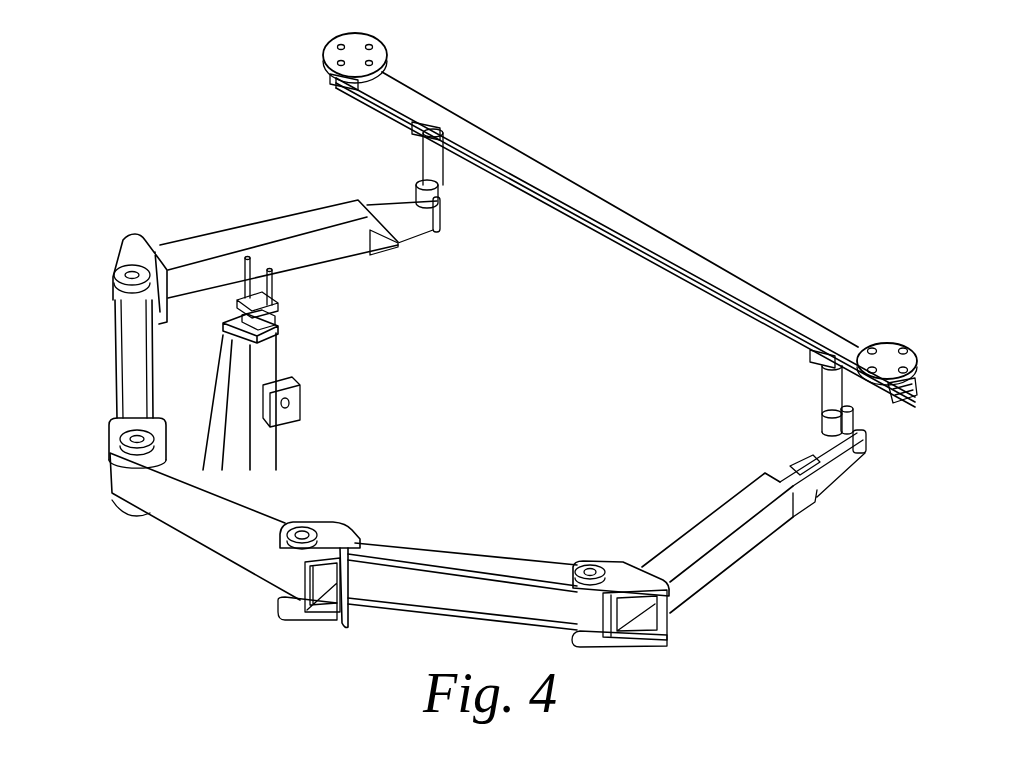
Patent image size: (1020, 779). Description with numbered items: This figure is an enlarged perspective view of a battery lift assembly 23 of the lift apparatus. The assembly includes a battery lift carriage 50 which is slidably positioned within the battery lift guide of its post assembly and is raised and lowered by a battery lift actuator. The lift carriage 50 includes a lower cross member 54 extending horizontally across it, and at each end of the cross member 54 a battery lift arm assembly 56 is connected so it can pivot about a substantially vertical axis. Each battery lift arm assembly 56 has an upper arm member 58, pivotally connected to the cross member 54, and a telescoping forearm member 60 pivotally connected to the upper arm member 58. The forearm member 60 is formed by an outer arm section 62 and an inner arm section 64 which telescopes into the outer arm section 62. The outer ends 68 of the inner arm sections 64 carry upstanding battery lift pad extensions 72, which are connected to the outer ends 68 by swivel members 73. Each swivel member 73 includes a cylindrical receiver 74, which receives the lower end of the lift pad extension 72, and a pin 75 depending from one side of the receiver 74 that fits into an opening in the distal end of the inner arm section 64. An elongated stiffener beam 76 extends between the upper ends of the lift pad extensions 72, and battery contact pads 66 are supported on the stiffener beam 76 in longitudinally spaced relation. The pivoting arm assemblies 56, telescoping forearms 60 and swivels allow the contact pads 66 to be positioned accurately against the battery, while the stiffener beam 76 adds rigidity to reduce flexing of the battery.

The battery lift assembly 23 is at (187, 540).
The battery lift carriage 50 is at (277, 349).
The lower cross member 54 is at (240, 556).
The battery lift arm assembly 56 is at (168, 243).
The upper arm member 58 is at (116, 369).
The telescoping forearm member 60 is at (343, 199).
The outer arm section 62 is at (253, 232).
The inner arm section 64 is at (403, 245).
The battery contact pad 66 is at (333, 55).
The outer end 68 is at (401, 202).
The battery lift pad extension 72 is at (447, 163).
The swivel member 73 is at (820, 414).
The cylindrical receiver 74 is at (442, 202).
The pin 75 is at (855, 419).
The stiffener beam 76 is at (660, 240).